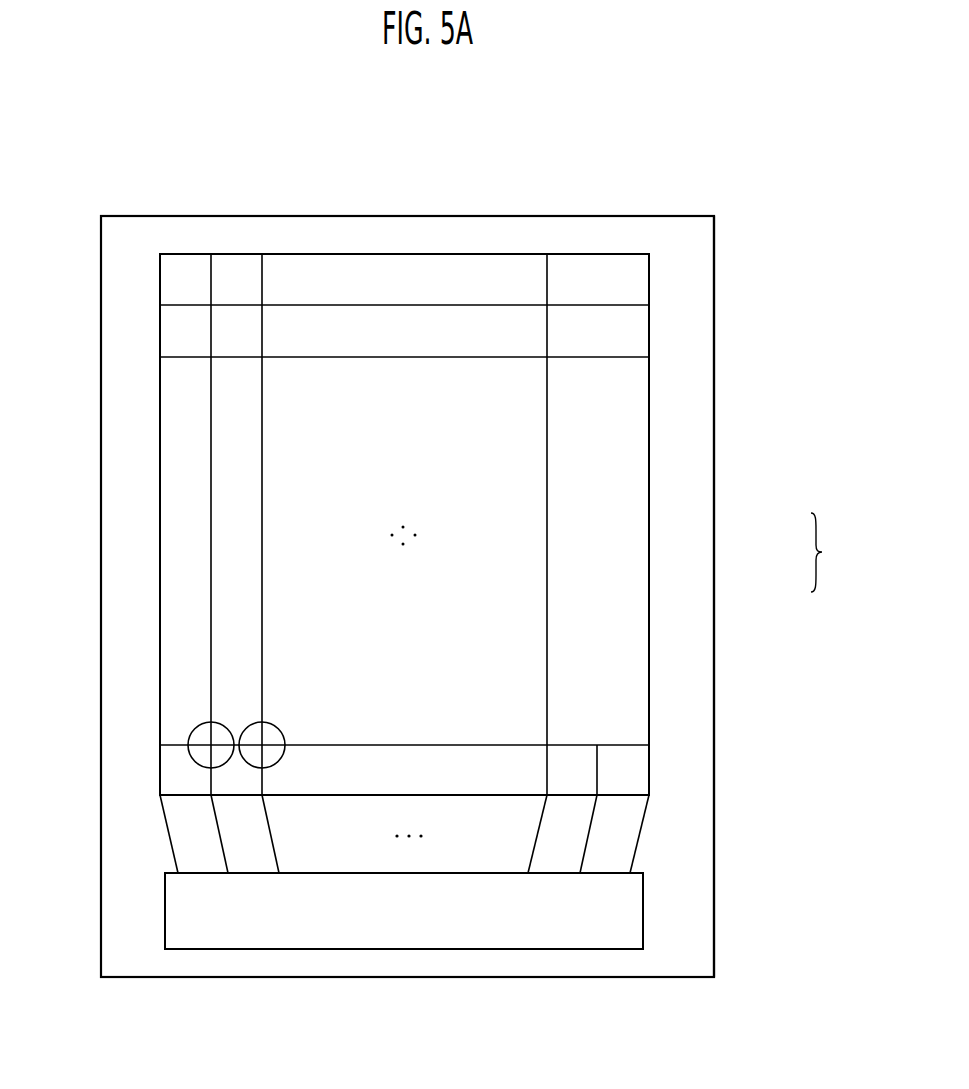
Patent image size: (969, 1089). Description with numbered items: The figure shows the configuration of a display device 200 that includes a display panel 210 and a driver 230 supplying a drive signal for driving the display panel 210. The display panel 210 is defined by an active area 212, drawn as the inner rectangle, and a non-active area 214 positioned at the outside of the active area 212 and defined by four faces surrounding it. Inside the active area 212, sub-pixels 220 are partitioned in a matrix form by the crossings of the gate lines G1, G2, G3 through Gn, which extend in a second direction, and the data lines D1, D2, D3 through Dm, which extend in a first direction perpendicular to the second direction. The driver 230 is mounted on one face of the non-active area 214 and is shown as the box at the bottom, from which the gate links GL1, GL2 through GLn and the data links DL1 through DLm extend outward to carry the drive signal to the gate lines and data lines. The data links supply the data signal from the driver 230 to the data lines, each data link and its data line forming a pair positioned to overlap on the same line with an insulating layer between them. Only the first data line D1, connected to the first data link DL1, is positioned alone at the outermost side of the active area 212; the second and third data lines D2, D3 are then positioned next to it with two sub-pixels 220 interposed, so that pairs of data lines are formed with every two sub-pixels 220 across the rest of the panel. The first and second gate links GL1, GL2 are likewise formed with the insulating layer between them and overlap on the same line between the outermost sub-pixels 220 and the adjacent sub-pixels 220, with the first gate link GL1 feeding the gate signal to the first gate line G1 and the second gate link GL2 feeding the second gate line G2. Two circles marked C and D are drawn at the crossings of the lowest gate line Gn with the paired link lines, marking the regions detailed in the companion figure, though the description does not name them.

The display device 200 is at (669, 109).
The sub-pixel 220 is at (183, 268).
The driver 230 is at (377, 949).
The display panel 210 is at (833, 552).
The active area 212 is at (649, 525).
The non-active area 214 is at (714, 580).
The first gate line G1 is at (383, 253).
The second gate line G2 is at (413, 304).
The third gate line G3 is at (478, 357).
The n-th gate line Gn is at (360, 745).
The first data line D1 is at (160, 519).
The second data line D2 is at (262, 573).
The third data line D3 is at (256, 834).
The m-th data line Dm is at (547, 612).
The first gate link GL1 is at (210, 473).
The second gate link GL2 is at (207, 834).
The n-th gate link GLn is at (597, 770).
The first data link DL1 is at (159, 834).
The m-th data link DLm is at (512, 834).
The capacitor / pixel element C is at (188, 735).
The diode / pixel element D is at (278, 728).